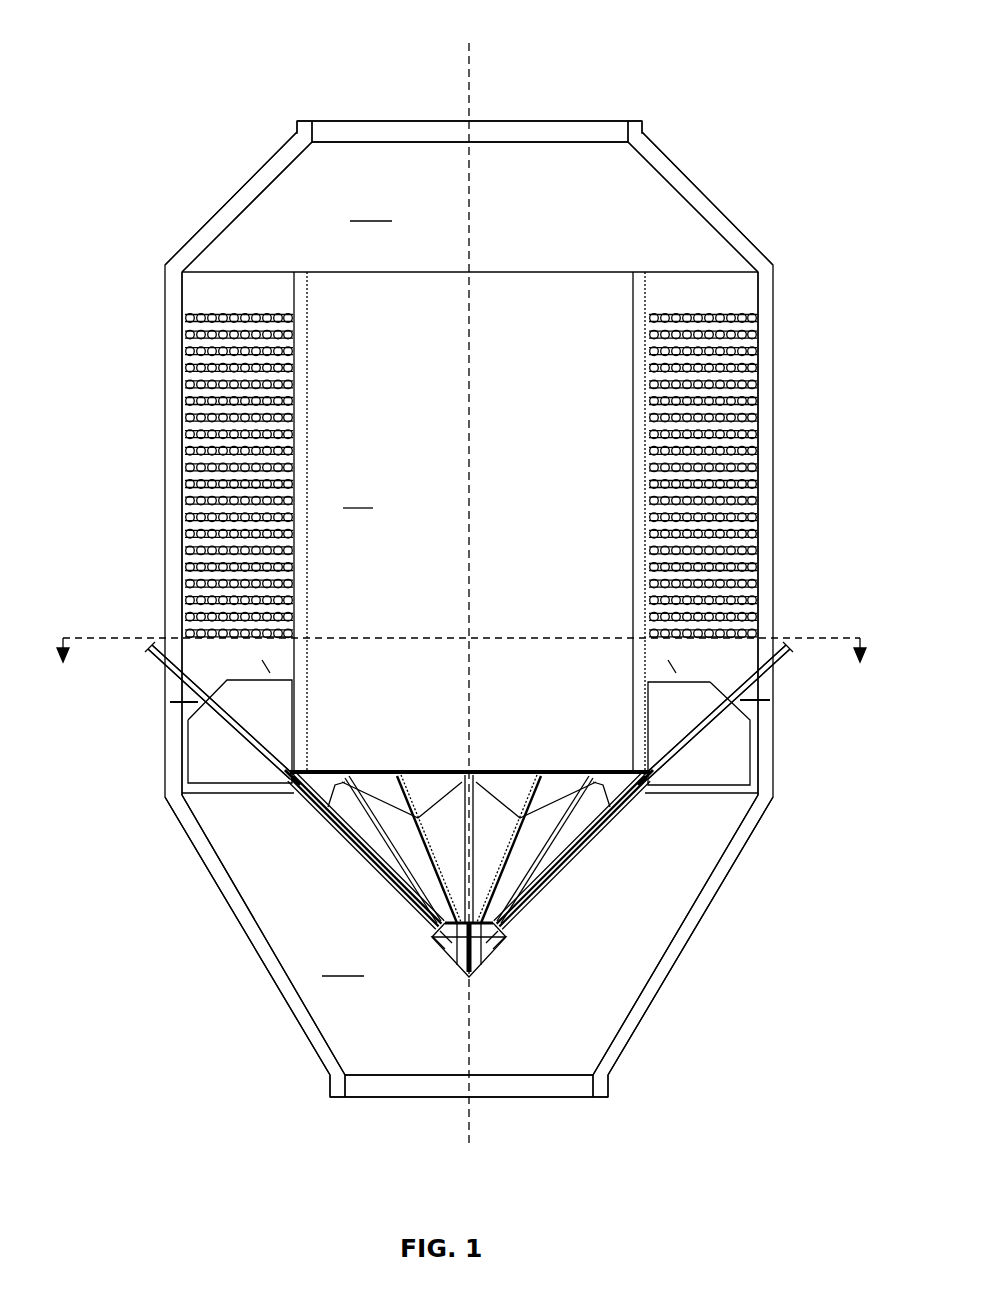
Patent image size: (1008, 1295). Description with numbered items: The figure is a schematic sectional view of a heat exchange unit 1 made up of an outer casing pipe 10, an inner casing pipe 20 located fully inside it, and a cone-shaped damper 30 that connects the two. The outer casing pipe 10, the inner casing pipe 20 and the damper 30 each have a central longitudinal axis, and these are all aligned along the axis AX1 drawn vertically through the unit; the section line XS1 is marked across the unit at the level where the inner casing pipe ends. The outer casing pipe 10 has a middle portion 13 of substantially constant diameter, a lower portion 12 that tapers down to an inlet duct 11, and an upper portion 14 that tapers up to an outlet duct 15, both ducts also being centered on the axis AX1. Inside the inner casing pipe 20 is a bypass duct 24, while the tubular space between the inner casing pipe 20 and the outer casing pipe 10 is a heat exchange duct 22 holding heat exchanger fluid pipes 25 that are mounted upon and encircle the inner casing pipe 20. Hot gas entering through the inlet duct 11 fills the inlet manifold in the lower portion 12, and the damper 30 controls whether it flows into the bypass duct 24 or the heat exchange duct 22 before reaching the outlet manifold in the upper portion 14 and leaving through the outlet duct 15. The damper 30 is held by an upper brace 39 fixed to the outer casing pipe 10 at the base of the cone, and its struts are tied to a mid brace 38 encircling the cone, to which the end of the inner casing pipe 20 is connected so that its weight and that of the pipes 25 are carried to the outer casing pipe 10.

The heat exchange unit 1 is at (100, 50).
The outer casing pipe 10 is at (172, 385).
The inlet duct 11 is at (330, 1093).
The lower portion 12 is at (277, 988).
The middle portion 13 is at (168, 446).
The upper portion 14 is at (245, 200).
The outlet duct 15 is at (297, 130).
The inner casing pipe 20 is at (637, 288).
The heat exchange duct 22 is at (705, 653).
The bypass duct 24 is at (470, 522).
The heat exchanger fluid pipes 25 is at (233, 312).
The damper 30 is at (570, 878).
The mid brace 38 is at (290, 780).
The upper brace 39 is at (190, 705).
The central longitudinal axis AX1 is at (468, 68).
The cross-section line XS1 is at (825, 638).